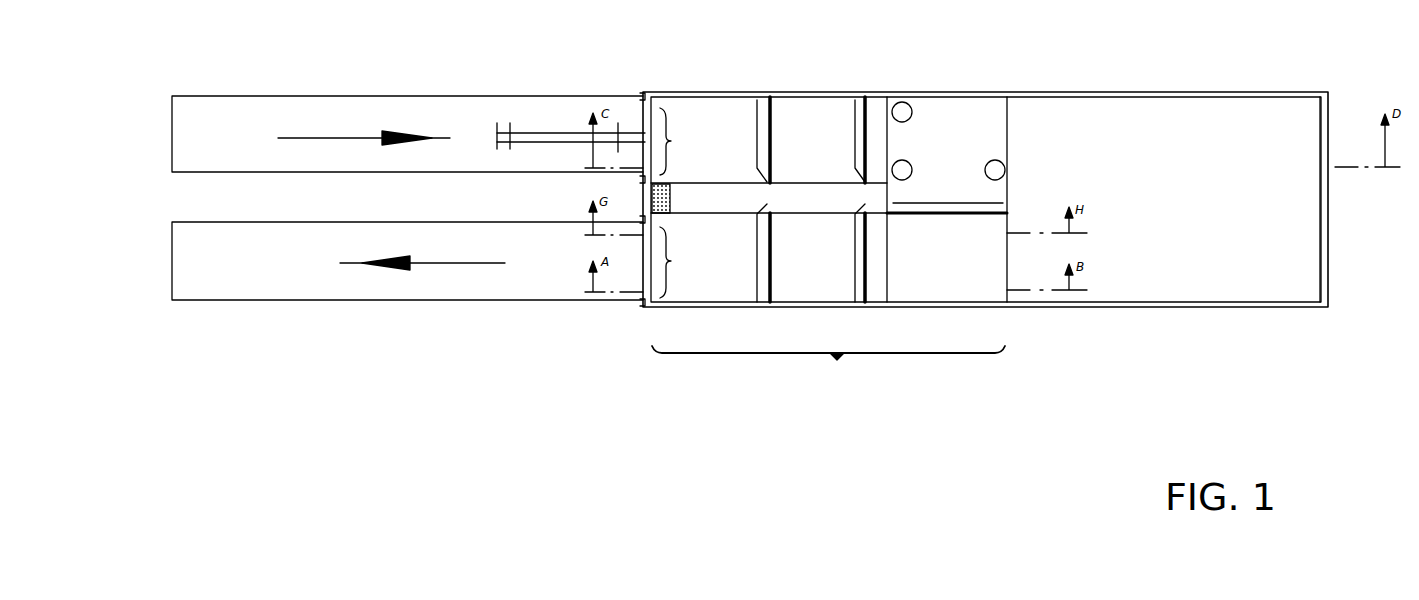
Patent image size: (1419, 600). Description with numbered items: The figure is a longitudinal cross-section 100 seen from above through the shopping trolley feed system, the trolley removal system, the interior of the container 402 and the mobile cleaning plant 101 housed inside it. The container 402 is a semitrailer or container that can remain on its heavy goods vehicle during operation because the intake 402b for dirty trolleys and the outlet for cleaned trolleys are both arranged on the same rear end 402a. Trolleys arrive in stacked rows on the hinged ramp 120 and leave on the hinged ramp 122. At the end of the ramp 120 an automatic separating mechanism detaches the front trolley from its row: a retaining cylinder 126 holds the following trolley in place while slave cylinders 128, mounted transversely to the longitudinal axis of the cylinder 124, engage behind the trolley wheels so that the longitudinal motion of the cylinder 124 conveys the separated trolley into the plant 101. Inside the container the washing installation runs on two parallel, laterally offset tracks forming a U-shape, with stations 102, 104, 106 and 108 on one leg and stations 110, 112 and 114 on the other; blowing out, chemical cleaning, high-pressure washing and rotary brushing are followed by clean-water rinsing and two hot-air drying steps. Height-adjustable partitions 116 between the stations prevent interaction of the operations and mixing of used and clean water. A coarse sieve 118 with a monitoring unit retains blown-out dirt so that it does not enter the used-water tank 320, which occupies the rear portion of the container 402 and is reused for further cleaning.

The longitudinal cross-section E-F 100 is at (435, 75).
The mobile cleaning plant 101 is at (828, 367).
The station #1a 102 is at (690, 108).
The station #1b 104 is at (735, 108).
The station #2 106 is at (815, 110).
The station #3 108 is at (947, 112).
The station #4 110 is at (940, 290).
The station #5 112 is at (810, 290).
The station #6 114 is at (703, 290).
The partition 116 is at (858, 310).
The coarse sieve 118 is at (658, 216).
The hinged ramp 120 is at (350, 167).
The hinged ramp 122 is at (330, 294).
The cylinder 124 is at (539, 142).
The retaining cylinder 126 is at (498, 152).
The slave cylinder 128 is at (514, 158).
The used-water tank 320 is at (1250, 270).
The container 402 is at (1128, 303).
The rear end 402a is at (603, 65).
The intake 402b is at (769, 145).